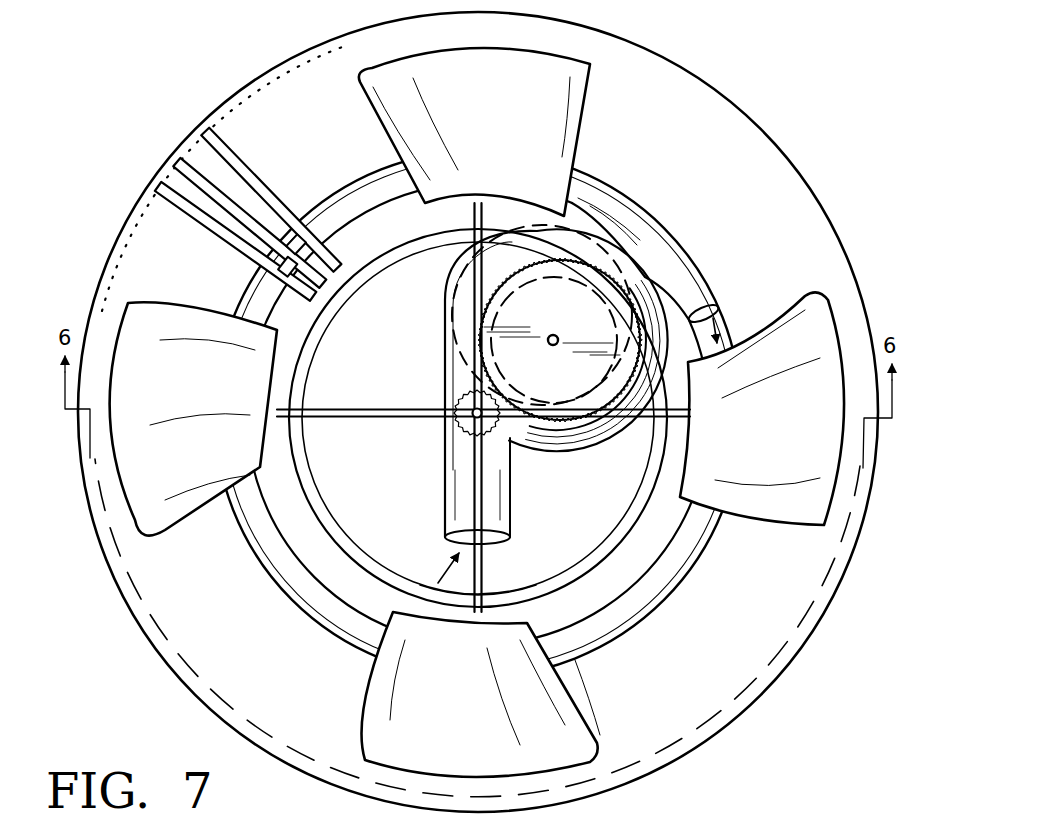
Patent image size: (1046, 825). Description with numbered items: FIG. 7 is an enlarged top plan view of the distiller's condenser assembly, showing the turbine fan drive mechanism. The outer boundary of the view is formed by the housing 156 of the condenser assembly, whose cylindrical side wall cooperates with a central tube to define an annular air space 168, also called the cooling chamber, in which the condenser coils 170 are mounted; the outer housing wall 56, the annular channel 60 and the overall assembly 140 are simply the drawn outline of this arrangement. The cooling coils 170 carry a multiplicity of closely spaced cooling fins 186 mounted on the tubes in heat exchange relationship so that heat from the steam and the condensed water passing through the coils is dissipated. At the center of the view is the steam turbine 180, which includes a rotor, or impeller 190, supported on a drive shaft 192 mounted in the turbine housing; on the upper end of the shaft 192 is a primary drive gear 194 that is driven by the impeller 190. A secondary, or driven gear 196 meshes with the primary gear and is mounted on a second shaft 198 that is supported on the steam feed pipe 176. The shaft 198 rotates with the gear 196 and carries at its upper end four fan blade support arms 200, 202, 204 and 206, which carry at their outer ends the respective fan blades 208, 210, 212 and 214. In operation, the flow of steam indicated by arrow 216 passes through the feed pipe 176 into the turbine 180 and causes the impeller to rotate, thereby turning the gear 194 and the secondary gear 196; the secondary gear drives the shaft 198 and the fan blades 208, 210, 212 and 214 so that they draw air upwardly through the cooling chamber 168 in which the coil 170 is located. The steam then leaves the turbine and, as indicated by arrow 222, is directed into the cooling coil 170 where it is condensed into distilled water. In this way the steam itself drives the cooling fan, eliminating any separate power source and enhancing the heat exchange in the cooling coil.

The housing 56 is at (820, 641).
The annular channel 60 is at (182, 490).
The fluid distribution assembly 140 is at (157, 680).
The housing 156 is at (622, 553).
The annular air space 168 is at (752, 180).
The condenser coils 170 is at (677, 240).
The steam feed pipe 176 is at (508, 525).
The steam turbine 180 is at (562, 448).
The cooling fins 186 is at (160, 188).
The rotor, or impeller 190 is at (525, 237).
The drive shaft 192 is at (548, 340).
The primary drive gear 194 is at (637, 250).
The secondary, or driven gear 196 is at (458, 398).
The second shaft 198 is at (466, 430).
The fan blade support arm 200 is at (316, 428).
The fan blade support arm 202 is at (467, 235).
The fan blade support arm 204 is at (651, 432).
The fan blade support arm 206 is at (492, 586).
The fan blade 208 is at (155, 516).
The fan blade 210 is at (572, 95).
The fan blade 212 is at (805, 296).
The fan blade 214 is at (572, 740).
The arrow indicating steam flow 216 is at (437, 572).
The arrow indicating steam flow 222 is at (722, 312).